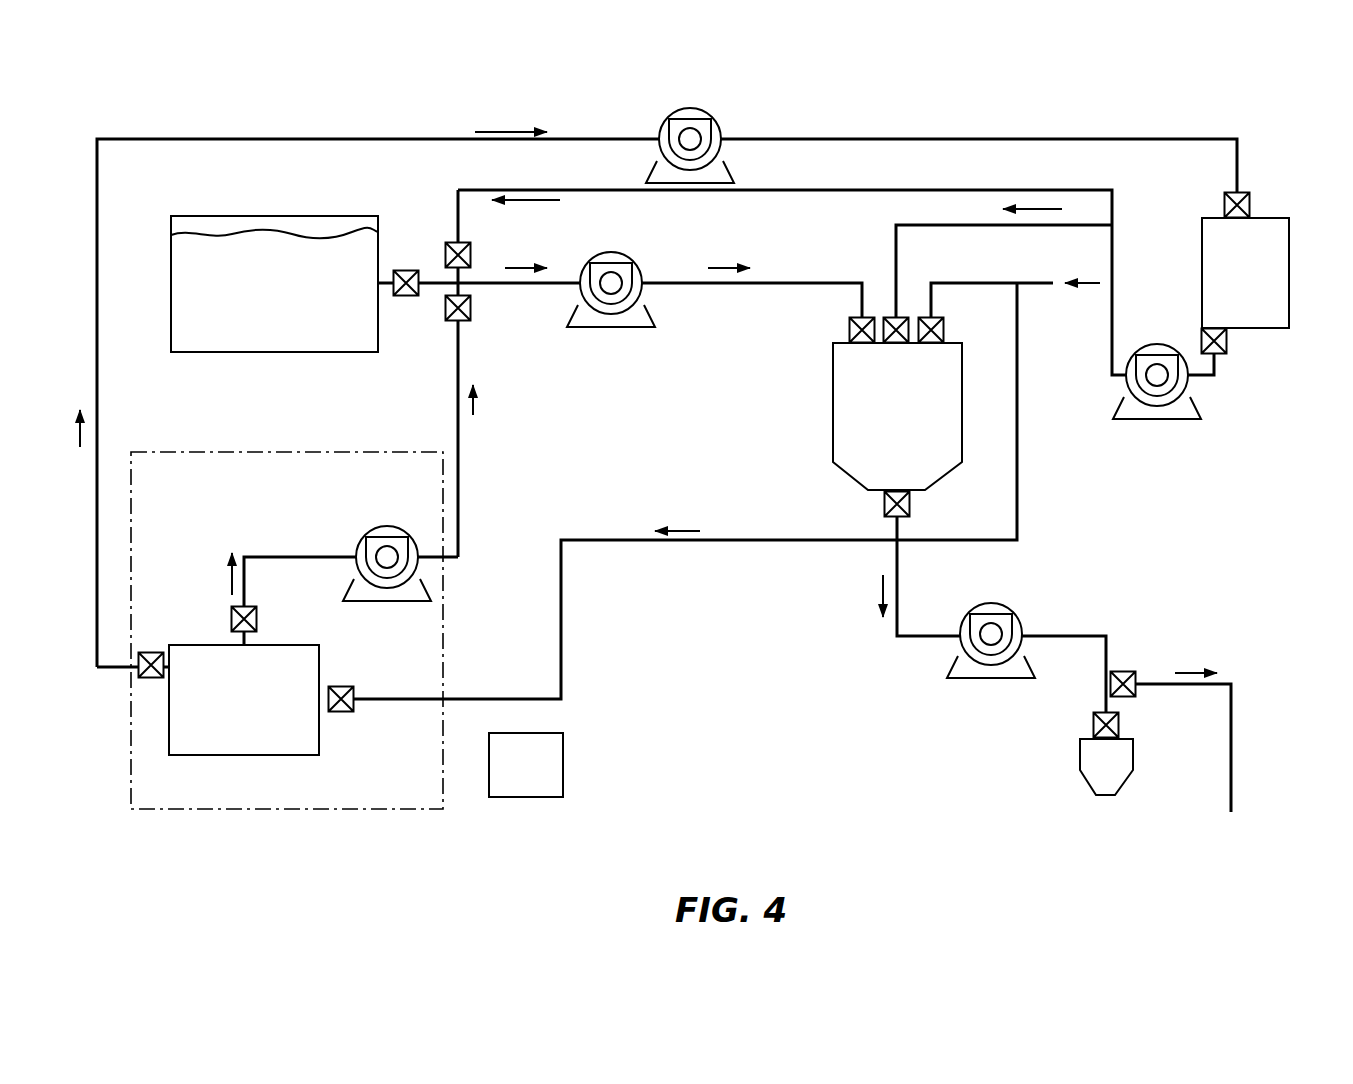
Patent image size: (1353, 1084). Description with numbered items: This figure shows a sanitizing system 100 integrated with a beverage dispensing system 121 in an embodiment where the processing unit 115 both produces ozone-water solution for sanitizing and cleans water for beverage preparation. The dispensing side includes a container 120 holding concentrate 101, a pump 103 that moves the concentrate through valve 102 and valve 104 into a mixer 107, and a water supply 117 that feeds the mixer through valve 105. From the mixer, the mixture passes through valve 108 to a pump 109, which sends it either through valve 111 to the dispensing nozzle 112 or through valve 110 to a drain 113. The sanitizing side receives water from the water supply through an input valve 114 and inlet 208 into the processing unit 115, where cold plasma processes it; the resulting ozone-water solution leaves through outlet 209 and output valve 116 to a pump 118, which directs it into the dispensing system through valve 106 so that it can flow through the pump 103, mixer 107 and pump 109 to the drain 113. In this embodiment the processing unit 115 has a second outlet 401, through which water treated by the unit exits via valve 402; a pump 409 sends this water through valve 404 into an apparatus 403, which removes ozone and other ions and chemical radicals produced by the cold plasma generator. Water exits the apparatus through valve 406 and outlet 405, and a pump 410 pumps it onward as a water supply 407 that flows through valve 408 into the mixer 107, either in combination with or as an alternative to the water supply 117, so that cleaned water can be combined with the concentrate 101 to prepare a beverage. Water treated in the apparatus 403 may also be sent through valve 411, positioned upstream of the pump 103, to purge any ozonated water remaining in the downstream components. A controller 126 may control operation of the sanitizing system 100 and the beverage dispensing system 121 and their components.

The sanitizing system 100 is at (287, 630).
The concentrate 101 is at (274, 284).
The valve 102 is at (412, 268).
The pump 103 is at (600, 262).
The valve 104 is at (853, 330).
The valve 105 is at (945, 325).
The valve 106 is at (471, 300).
The mixer 107 is at (897, 416).
The valve 108 is at (884, 504).
The pump 109 is at (980, 606).
The valve 110 is at (1136, 678).
The valve 111 is at (1093, 725).
The dispensing nozzle 112 is at (1084, 772).
The drain 113 is at (1232, 808).
The input valve 114 is at (341, 712).
The processing unit 115 is at (244, 700).
The output valve 116 is at (231, 615).
The water supply 117 is at (1047, 281).
The pump 118 is at (378, 545).
The container 120 is at (218, 353).
The beverage dispensing system 121 is at (690, 703).
The controller 126 is at (563, 768).
The inlet 208 is at (362, 695).
The outlet 209 is at (247, 583).
The second outlet 401 is at (151, 680).
The valve 402 is at (151, 652).
The apparatus 403 is at (1245, 273).
The valve 404 is at (1250, 198).
The outlet 405 is at (1220, 362).
The valve 406 is at (1228, 338).
The water supply 407 is at (890, 318).
The valve 408 is at (901, 318).
The pump 409 is at (724, 163).
The pump 410 is at (1125, 398).
The valve 411 is at (470, 250).